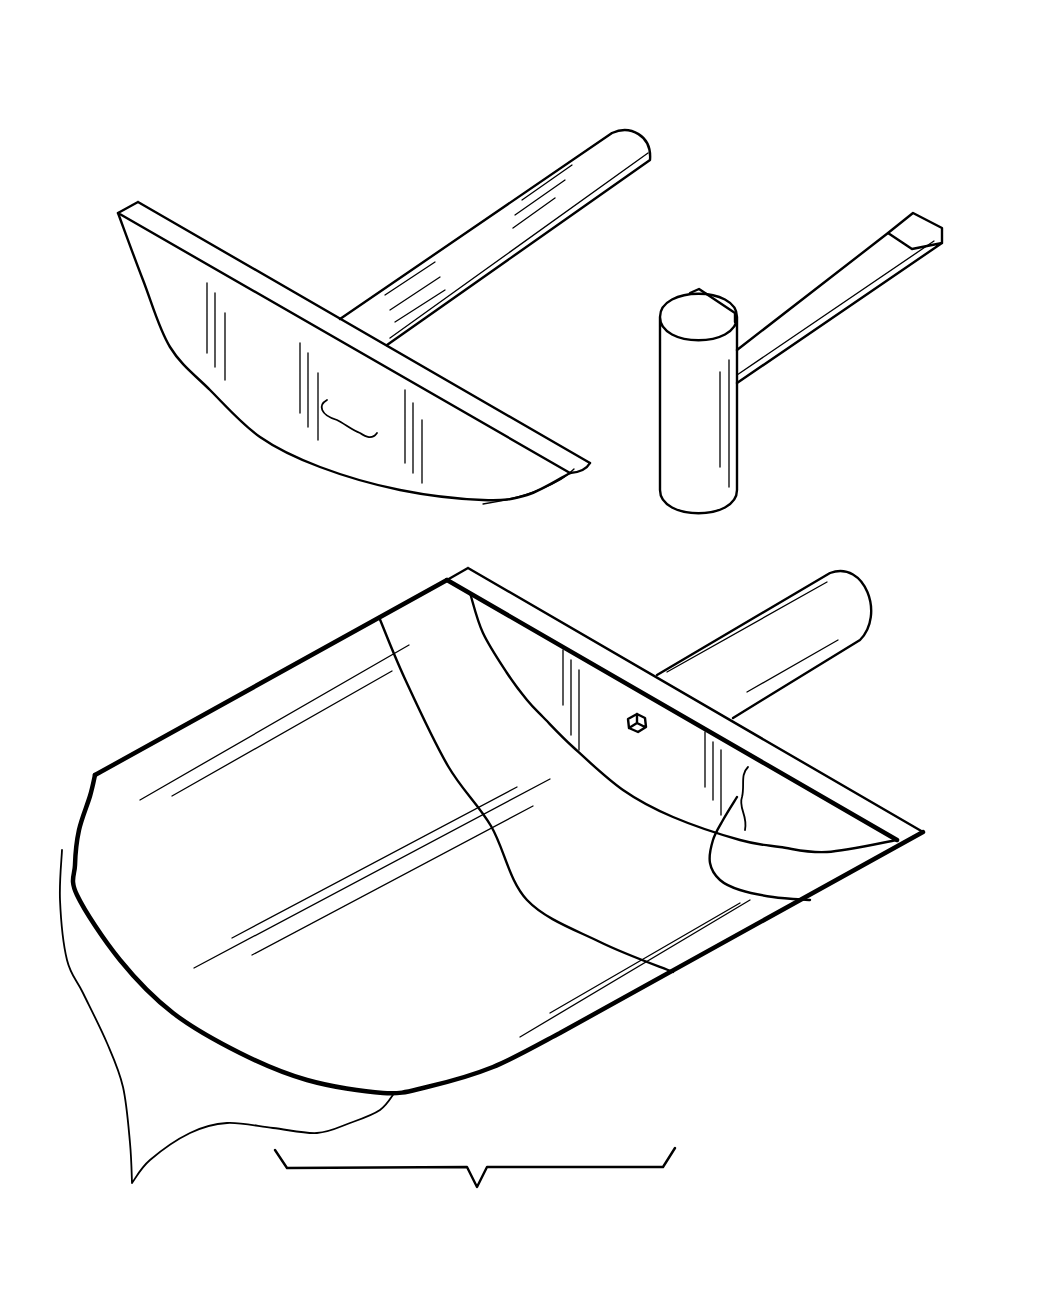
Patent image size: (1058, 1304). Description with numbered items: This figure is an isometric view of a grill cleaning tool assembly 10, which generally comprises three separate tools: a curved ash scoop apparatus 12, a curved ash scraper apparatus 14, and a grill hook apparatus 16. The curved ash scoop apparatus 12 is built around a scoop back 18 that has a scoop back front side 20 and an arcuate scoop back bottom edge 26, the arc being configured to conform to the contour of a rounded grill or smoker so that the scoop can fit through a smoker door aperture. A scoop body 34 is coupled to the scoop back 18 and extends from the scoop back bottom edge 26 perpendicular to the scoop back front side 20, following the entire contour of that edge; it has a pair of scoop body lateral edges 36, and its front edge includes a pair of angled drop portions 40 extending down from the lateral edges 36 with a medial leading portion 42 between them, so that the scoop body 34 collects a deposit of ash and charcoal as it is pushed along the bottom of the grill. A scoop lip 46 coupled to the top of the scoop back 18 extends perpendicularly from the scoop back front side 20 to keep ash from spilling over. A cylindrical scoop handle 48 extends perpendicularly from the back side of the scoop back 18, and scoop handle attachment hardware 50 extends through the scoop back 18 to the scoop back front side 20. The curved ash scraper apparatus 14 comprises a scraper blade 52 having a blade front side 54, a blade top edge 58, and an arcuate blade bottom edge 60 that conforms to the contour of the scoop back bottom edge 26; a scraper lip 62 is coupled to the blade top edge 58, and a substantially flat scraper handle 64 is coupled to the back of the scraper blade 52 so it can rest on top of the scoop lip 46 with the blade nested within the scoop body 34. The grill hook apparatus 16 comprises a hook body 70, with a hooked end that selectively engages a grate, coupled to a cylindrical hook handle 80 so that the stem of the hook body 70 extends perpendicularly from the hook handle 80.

The grill cleaning tool assembly 10 is at (252, 13).
The curved ash scoop apparatus 12 is at (232, 628).
The curved ash scraper apparatus 14 is at (446, 174).
The grill hook apparatus 16 is at (805, 206).
The scoop back 18 is at (823, 823).
The scoop back front side 20 is at (793, 902).
The scoop back bottom edge 26 is at (545, 720).
The scoop body 34 is at (533, 1015).
The scoop body lateral edges 36 is at (673, 972).
The angled drop portions 40 is at (227, 1036).
The medial leading portion 42 is at (187, 1020).
The scoop lip 46 is at (790, 760).
The scoop handle 48 is at (840, 603).
The scoop handle attachment hardware 50 is at (638, 713).
The scraper blade 52 is at (316, 347).
The blade front side 54 is at (338, 422).
The blade top edge 58 is at (245, 283).
The blade bottom edge 60 is at (170, 347).
The scraper lip 62 is at (495, 420).
The scraper handle 64 is at (573, 183).
The hook body 70 is at (853, 293).
The hook handle 80 is at (717, 447).